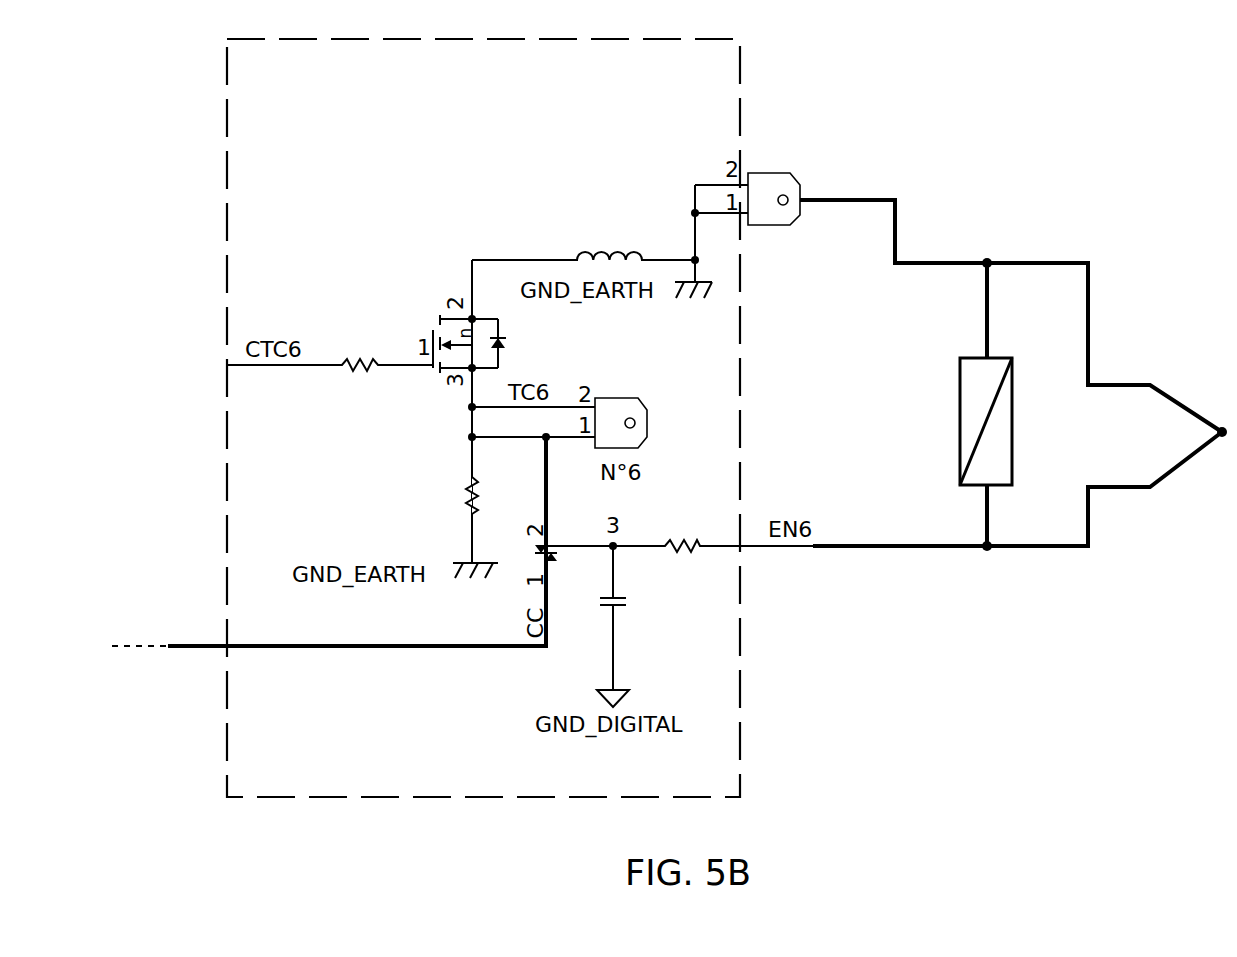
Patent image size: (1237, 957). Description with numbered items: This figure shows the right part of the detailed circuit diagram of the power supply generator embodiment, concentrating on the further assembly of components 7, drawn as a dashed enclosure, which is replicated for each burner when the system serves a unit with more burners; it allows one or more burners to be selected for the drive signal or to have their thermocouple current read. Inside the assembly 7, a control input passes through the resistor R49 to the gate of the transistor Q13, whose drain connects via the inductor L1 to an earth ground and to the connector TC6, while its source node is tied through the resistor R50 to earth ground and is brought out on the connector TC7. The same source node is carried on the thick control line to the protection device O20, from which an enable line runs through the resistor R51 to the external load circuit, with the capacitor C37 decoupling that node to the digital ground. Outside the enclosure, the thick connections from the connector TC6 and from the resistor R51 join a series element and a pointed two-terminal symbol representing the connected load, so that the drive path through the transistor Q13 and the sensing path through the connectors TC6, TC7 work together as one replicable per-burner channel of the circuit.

The further assembly of components 7 is at (483, 418).
The resistor R49 is at (330, 351).
The MOSFET transistor Q13 is at (495, 344).
The inductor L1 is at (583, 239).
The connector TC6 is at (769, 197).
The connector TC7 is at (581, 418).
The resistor R50 is at (469, 525).
The resistor R51 is at (679, 560).
The transient voltage suppressor diode O20 is at (556, 526).
The capacitor C37 is at (603, 626).